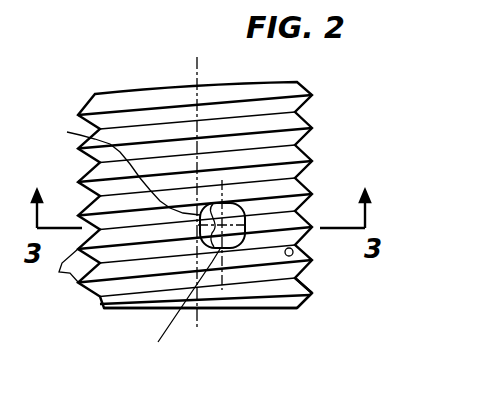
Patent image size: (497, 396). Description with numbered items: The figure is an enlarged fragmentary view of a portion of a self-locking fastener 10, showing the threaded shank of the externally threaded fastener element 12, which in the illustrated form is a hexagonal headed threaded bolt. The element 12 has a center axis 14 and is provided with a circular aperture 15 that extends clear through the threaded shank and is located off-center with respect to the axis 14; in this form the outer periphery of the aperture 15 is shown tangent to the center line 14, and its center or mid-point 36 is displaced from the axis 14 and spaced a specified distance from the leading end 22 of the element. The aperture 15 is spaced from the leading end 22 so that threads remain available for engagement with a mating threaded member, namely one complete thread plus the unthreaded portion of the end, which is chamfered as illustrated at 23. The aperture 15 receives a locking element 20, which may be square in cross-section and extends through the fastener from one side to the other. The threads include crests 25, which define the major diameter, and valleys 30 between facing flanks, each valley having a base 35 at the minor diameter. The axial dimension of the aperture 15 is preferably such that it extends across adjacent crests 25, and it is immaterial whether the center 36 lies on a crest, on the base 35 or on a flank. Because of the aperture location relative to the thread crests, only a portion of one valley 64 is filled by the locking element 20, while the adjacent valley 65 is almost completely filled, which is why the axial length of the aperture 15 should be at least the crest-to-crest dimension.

The self-locking fastener 10 is at (385, 131).
The externally threaded fastener element 12 is at (78, 165).
The center axis 14 is at (199, 67).
The aperture 15 is at (205, 237).
The locking element 20 is at (245, 212).
The leading end 22 is at (270, 310).
The chamfer 23 is at (302, 301).
The crests 25 is at (62, 276).
The valleys 30 is at (312, 280).
The base 35 is at (300, 253).
The center 36 is at (218, 205).
The wire strand 64 is at (189, 308).
The adjacent valley 65 is at (117, 166).